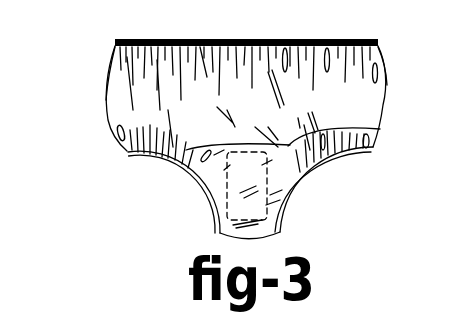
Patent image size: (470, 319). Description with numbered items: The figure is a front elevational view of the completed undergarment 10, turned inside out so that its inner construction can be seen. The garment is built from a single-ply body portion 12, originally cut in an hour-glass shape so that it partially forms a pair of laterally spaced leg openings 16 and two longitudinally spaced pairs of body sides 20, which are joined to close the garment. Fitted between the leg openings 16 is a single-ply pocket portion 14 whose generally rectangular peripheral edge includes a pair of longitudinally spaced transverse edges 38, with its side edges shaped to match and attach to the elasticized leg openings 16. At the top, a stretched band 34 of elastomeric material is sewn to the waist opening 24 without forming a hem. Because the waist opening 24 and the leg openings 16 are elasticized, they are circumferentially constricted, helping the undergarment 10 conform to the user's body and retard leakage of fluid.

The undergarment 10 is at (252, 123).
The body portion 12 is at (368, 100).
The pocket portion 14 is at (291, 186).
The leg openings 16 is at (177, 167).
The body sides 20 is at (106, 97).
The waist opening 24 is at (346, 38).
The stretched band 34 is at (221, 31).
The transverse edges 38 is at (382, 132).